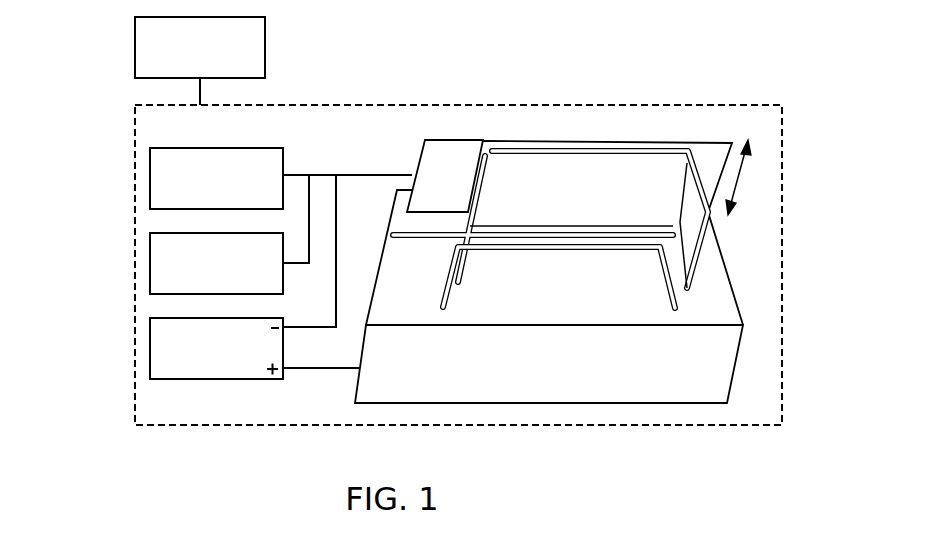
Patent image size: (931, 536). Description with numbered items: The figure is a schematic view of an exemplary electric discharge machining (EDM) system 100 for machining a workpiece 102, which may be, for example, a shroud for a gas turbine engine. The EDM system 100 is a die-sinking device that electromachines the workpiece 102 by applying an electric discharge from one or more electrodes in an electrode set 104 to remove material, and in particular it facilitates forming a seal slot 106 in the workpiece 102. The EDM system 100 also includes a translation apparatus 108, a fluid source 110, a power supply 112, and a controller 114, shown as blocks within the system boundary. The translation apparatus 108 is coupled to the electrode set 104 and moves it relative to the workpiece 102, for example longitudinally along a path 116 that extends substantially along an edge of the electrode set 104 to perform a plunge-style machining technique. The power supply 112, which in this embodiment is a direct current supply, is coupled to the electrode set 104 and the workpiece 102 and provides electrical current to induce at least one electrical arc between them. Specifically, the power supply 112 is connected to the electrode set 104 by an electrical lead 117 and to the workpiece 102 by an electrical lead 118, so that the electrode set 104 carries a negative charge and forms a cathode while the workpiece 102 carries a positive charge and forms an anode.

The electric discharge machining (EDM) system 100 is at (683, 66).
The workpiece 102 is at (537, 405).
The electrode set 104 is at (543, 134).
The seal slot 106 is at (669, 302).
The translation apparatus 108 is at (150, 178).
The fluid source 110 is at (150, 263).
The power supply 112 is at (150, 349).
The controller 114 is at (135, 47).
The path 116 is at (739, 178).
The electrical lead 117 is at (300, 330).
The electrical lead 118 is at (315, 368).